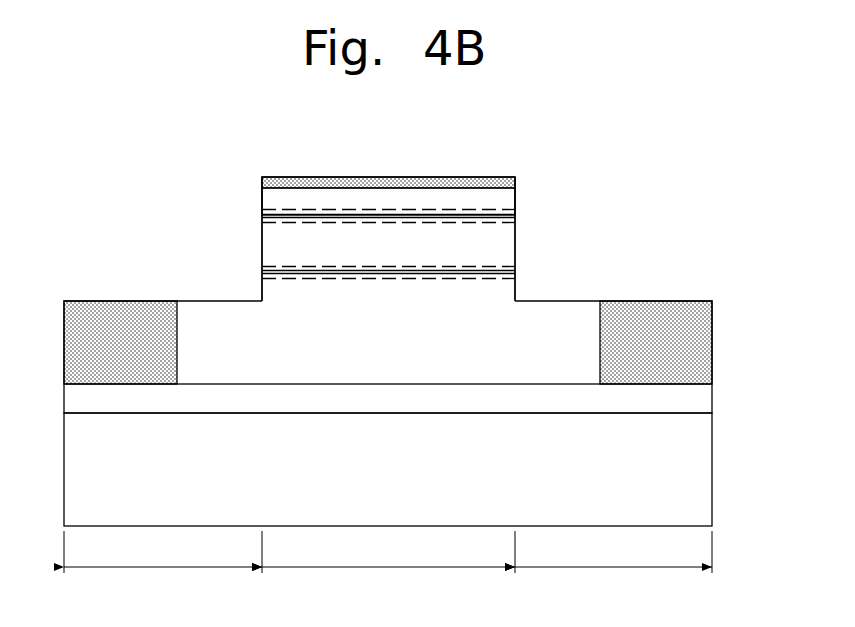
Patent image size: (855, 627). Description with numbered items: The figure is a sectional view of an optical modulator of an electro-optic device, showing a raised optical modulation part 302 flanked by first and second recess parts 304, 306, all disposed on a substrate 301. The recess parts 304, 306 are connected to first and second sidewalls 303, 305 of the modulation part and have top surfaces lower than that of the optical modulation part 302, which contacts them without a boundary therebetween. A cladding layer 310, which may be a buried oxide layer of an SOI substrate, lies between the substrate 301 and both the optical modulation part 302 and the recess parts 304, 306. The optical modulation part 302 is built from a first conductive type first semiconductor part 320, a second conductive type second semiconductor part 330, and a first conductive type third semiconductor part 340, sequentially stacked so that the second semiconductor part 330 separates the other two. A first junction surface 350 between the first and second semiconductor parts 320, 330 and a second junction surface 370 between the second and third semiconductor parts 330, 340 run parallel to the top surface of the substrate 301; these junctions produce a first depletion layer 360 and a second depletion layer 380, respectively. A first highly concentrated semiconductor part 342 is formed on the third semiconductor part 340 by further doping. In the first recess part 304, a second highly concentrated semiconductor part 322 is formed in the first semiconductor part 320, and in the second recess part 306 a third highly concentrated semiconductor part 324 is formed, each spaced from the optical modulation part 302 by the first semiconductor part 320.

The substrate 301 is at (700, 470).
The optical modulation part 302 is at (388, 581).
The first sidewall 303 is at (262, 199).
The first recess part 304 is at (163, 581).
The second sidewall 305 is at (515, 199).
The second recess part 306 is at (613, 581).
The cladding layer 310 is at (700, 397).
The first semiconductor part 320 is at (203, 312).
The second highly concentrated semiconductor part 322 is at (113, 312).
The third highly concentrated semiconductor part 324 is at (700, 337).
The second semiconductor part 330 is at (507, 243).
The third semiconductor part 340 is at (465, 198).
The first highly concentrated semiconductor part 342 is at (303, 177).
The first junction surface 350 is at (407, 271).
The first depletion layer 360 is at (516, 264).
The second junction surface 370 is at (357, 215).
The second depletion layer 380 is at (516, 207).